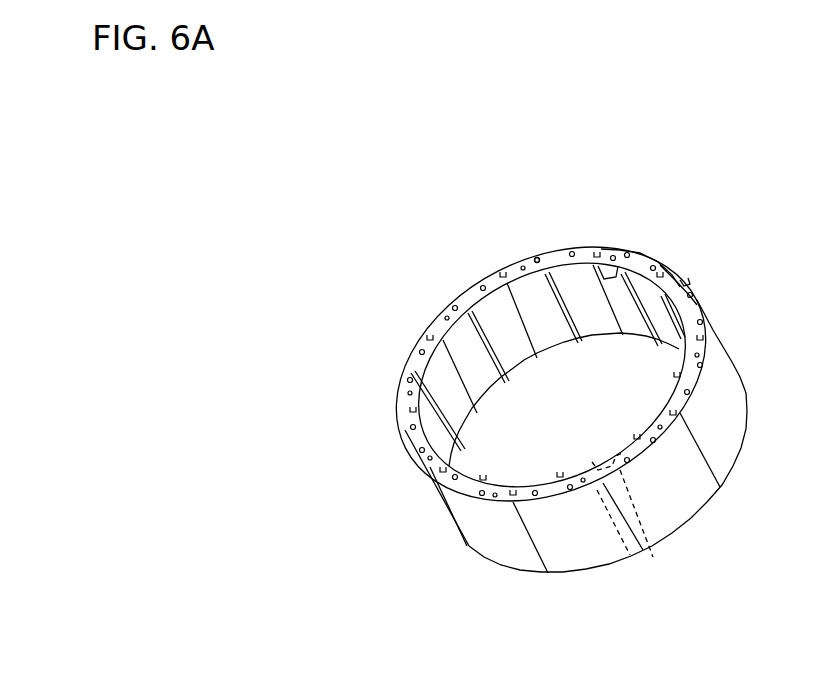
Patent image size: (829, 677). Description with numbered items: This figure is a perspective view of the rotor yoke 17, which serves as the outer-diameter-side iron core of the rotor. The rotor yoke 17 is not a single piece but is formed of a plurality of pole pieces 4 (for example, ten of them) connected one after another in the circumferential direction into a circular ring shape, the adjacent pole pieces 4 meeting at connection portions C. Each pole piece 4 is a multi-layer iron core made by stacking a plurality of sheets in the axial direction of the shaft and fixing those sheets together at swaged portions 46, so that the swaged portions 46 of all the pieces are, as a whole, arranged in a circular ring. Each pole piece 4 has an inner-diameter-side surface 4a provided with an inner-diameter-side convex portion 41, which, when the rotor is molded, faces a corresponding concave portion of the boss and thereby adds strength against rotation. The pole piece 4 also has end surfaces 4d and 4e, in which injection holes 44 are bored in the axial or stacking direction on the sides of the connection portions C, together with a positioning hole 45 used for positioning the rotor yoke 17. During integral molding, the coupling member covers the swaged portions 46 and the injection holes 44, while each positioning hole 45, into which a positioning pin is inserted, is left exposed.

The rotor yoke 17 is at (324, 182).
The pole piece 4 is at (727, 420).
The inner-diameter-side surface 4a is at (490, 384).
The end surface 4d is at (476, 298).
The end surface 4e is at (552, 355).
The inner-diameter-side convex portion 41 is at (603, 250).
The injection hole 44 is at (688, 284).
The positioning hole 45 is at (537, 257).
The swaged portion 46 is at (688, 282).
The connection portion C is at (656, 562).